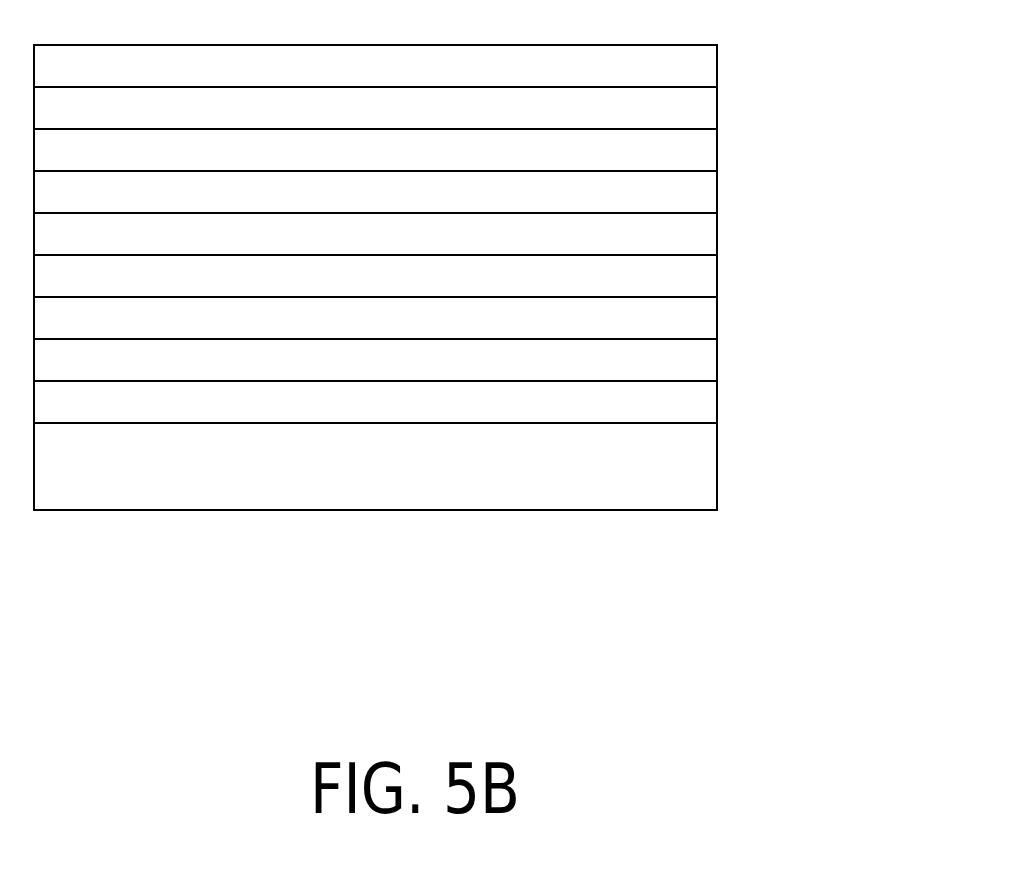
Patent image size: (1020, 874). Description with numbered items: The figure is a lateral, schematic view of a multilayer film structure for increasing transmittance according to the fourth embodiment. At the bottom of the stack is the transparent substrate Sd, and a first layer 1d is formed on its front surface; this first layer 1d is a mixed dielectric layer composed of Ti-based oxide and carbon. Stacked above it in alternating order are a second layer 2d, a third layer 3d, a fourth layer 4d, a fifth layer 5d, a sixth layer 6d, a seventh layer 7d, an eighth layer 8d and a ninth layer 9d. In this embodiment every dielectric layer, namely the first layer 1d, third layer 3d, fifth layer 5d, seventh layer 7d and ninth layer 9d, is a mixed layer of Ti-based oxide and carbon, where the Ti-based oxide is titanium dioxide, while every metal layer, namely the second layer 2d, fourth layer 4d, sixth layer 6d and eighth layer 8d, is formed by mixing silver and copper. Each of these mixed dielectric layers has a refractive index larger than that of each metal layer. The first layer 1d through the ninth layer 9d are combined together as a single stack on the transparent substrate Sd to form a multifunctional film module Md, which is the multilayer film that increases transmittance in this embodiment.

The ninth layer 9d is at (697, 74).
The eighth layer 8d is at (697, 116).
The seventh layer 7d is at (697, 158).
The sixth layer 6d is at (697, 200).
The fifth layer 5d is at (697, 242).
The fourth layer 4d is at (697, 284).
The third layer 3d is at (697, 326).
The second layer 2d is at (697, 368).
The first layer 1d is at (697, 410).
The transparent substrate Sd is at (695, 475).
The multifunctional film module Md is at (848, 77).